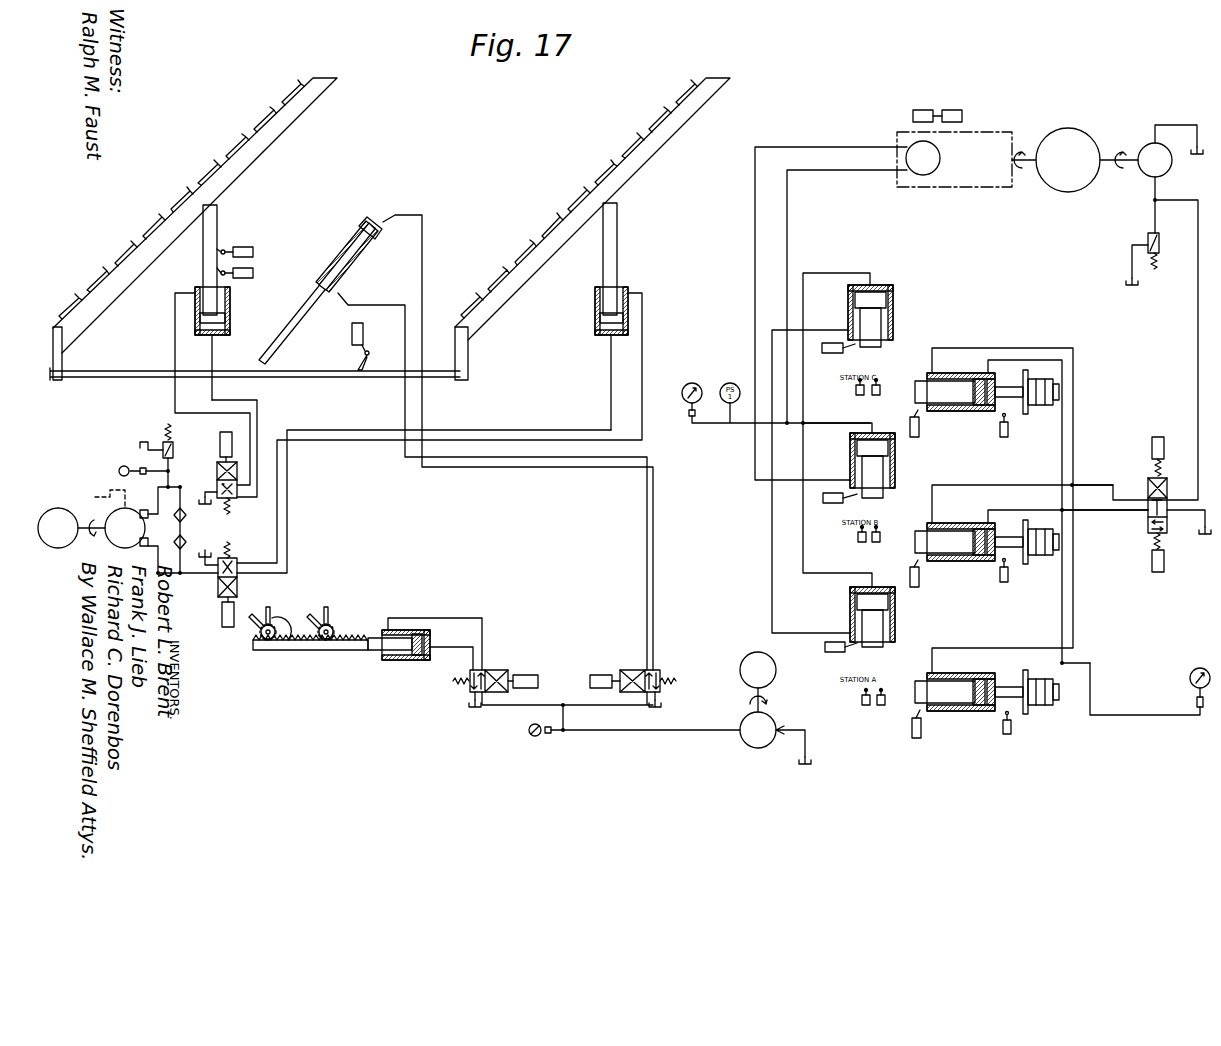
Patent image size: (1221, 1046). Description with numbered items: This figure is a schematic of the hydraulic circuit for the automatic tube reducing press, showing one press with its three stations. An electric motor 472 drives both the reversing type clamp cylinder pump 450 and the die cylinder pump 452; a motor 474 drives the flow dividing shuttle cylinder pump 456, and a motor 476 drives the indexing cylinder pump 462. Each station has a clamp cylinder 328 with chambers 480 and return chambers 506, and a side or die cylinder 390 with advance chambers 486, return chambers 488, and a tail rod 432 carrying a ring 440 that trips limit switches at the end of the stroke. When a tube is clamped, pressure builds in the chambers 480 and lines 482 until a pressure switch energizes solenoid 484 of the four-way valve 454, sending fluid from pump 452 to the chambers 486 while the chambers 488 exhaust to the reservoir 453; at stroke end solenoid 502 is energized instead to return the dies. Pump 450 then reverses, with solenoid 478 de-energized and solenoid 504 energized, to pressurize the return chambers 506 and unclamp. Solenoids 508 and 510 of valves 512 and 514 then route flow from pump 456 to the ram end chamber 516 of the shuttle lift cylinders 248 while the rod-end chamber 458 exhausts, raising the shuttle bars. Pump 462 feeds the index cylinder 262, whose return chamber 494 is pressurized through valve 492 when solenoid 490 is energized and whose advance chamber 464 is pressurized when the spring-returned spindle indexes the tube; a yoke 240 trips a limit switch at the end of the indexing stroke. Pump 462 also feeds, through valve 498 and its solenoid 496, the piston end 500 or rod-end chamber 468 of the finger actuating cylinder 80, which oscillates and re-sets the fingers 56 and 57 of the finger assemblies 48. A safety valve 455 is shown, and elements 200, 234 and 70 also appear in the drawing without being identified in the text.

The conveyor 200 is at (185, 198).
The piston rod 234 is at (217, 218).
The yoke 240 is at (318, 371).
The shuttle lift cylinder 248 is at (231, 302).
The index cylinder 262 is at (360, 238).
The advance chamber 464 is at (327, 265).
The return chamber 494 is at (378, 222).
The rod-end chamber 458 is at (197, 288).
The ram end chamber 516 is at (212, 335).
The reservoir 453 is at (110, 485).
The motor 474 is at (65, 508).
The shuttle cylinder pump 456 is at (132, 508).
The solenoid 508 is at (220, 442).
The solenoid operated valve 512 is at (217, 470).
The solenoid operated valve 514 is at (240, 583).
The solenoid 510 is at (222, 620).
The finger 56 is at (326, 608).
The finger 57 is at (330, 610).
The finger assembly 48 is at (342, 630).
The rack 70 is at (302, 652).
The finger actuating cylinder 80 is at (404, 660).
The rod-end chamber 468 is at (400, 630).
The piston end 500 is at (425, 633).
The solenoid operated valve 498 is at (498, 670).
The solenoid 496 is at (535, 675).
The solenoid operated valve 492 is at (640, 670).
The solenoid 490 is at (590, 683).
The motor 476 is at (740, 662).
The indexing cylinder pump 462 is at (740, 720).
The clamp cylinder pump 450 is at (905, 134).
The solenoid 504 is at (920, 110).
The solenoid 478 is at (955, 110).
The electric motor 472 is at (1068, 128).
The die cylinder pump 452 is at (1150, 143).
The safety valve 455 is at (1160, 243).
The solenoid 484 is at (1152, 451).
The four-way valve 454 is at (1148, 527).
The solenoid 502 is at (1156, 572).
The line 482 is at (835, 273).
The chamber 480 is at (887, 285).
The clamp cylinder 328 is at (890, 300).
The return chamber 506 is at (888, 320).
The advance chamber 486 is at (985, 375).
The side cylinder 390 is at (966, 378).
The return chamber 488 is at (975, 410).
The tail rod 432 is at (1010, 400).
The ring 440 is at (1052, 408).